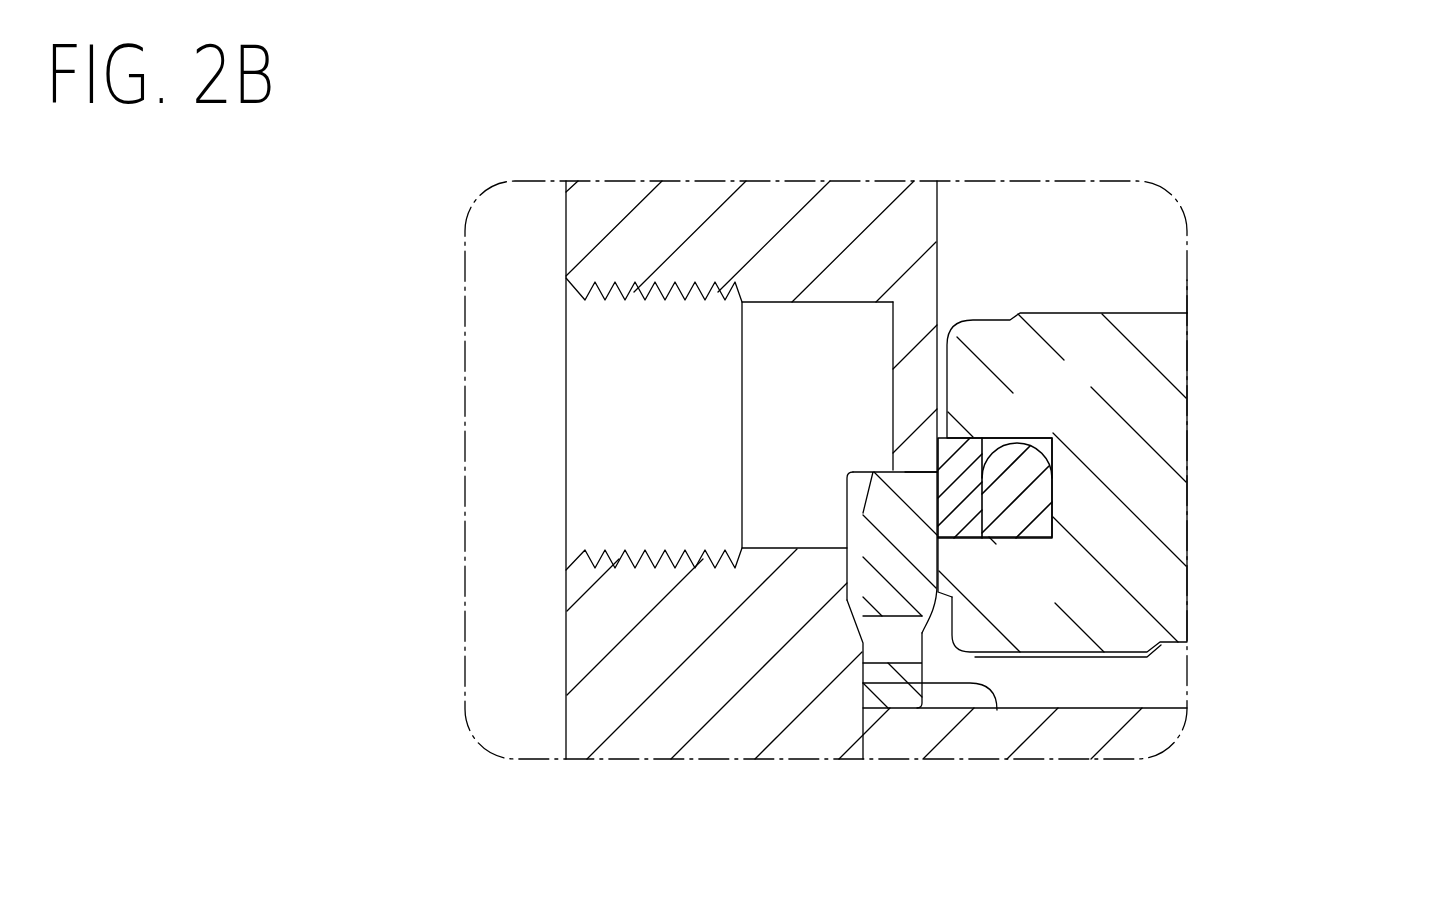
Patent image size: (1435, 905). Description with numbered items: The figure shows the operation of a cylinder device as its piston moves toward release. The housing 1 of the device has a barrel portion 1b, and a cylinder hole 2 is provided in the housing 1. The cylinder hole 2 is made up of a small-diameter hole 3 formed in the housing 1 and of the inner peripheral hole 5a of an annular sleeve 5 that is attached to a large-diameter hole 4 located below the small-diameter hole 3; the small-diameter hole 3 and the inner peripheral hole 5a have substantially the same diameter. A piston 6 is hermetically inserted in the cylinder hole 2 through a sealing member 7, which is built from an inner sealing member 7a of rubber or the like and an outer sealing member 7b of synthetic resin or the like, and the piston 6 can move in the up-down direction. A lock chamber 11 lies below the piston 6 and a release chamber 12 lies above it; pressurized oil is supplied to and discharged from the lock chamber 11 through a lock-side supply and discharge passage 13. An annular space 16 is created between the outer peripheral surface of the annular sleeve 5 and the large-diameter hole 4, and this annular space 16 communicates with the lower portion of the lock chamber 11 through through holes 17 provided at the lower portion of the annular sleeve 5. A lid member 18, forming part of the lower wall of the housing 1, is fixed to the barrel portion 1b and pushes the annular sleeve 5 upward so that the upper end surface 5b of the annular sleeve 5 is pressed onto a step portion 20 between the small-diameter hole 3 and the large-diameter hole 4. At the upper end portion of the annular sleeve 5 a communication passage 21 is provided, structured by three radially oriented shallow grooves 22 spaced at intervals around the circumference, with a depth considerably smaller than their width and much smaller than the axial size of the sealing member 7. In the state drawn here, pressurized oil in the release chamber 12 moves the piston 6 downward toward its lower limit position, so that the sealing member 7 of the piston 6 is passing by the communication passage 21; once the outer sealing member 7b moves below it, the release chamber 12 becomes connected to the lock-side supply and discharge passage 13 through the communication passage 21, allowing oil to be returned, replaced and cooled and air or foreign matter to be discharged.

The housing 1 is at (620, 470).
The barrel portion 1b is at (618, 235).
The cylinder hole 2 is at (826, 418).
The small-diameter hole 3 is at (937, 222).
The large-diameter hole 4 is at (997, 710).
The annular sleeve 5 is at (856, 532).
The inner peripheral hole 5a is at (938, 592).
The upper end surface 5b is at (905, 470).
The piston 6 is at (1137, 405).
The sealing member 7 is at (1180, 515).
The inner sealing member 7a is at (1038, 488).
The outer sealing member 7b is at (957, 509).
The lock chamber 11 is at (1150, 672).
The release chamber 12 is at (1137, 226).
The lock-side supply and discharge passage 13 is at (795, 398).
The annular space 16 is at (858, 485).
The through holes 17 is at (897, 643).
The lid member 18 is at (1052, 728).
The step portion 20 is at (938, 560).
The communication passage 21 is at (568, 413).
The grooves 22 is at (895, 470).